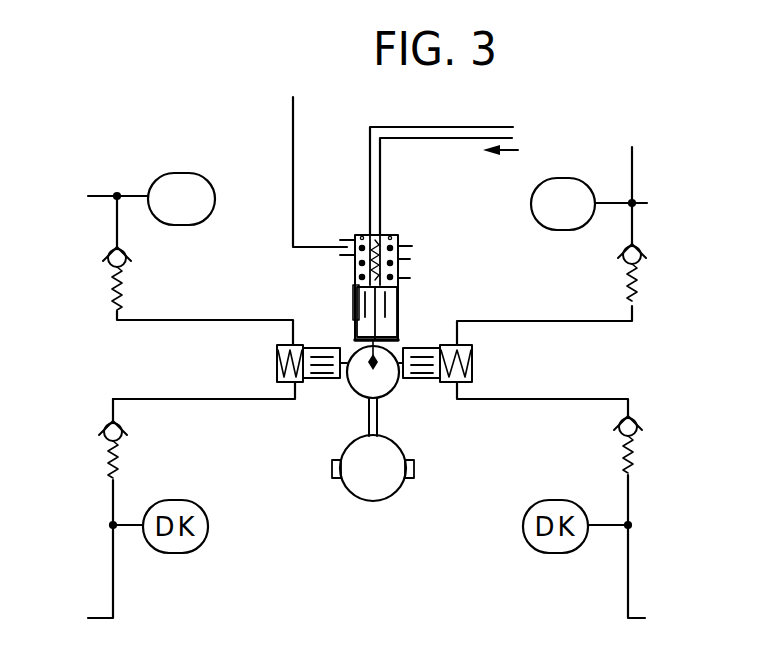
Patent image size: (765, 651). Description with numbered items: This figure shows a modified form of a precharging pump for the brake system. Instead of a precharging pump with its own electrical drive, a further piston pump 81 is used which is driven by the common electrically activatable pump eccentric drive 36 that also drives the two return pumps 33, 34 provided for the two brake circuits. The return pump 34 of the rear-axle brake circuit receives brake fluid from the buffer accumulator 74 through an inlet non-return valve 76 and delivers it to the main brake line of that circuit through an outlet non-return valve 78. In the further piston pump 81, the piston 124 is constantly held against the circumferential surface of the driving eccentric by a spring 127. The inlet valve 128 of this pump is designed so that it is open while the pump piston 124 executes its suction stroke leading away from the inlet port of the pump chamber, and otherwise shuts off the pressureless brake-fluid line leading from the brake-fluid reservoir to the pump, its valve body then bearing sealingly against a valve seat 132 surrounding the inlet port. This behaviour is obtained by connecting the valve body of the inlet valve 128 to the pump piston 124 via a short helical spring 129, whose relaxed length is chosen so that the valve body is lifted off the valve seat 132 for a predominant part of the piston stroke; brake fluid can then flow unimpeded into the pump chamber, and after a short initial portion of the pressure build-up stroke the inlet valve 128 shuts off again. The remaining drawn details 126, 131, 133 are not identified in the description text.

The return pump 33 is at (312, 384).
The return pump 34 is at (428, 382).
The pump eccentric drive 36 is at (362, 398).
The buffer accumulator 74 is at (572, 191).
The inlet non-return valve 76 is at (620, 262).
The outlet non-return valve 78 is at (618, 437).
The further piston pump 81 is at (348, 316).
The piston 124 is at (395, 335).
The port 126 is at (352, 257).
The spring 127 is at (400, 259).
The inlet valve 128 is at (382, 230).
The short helical spring 129 is at (400, 248).
The spring 131 is at (385, 240).
The valve seat 132 is at (362, 233).
The port 133 is at (400, 278).